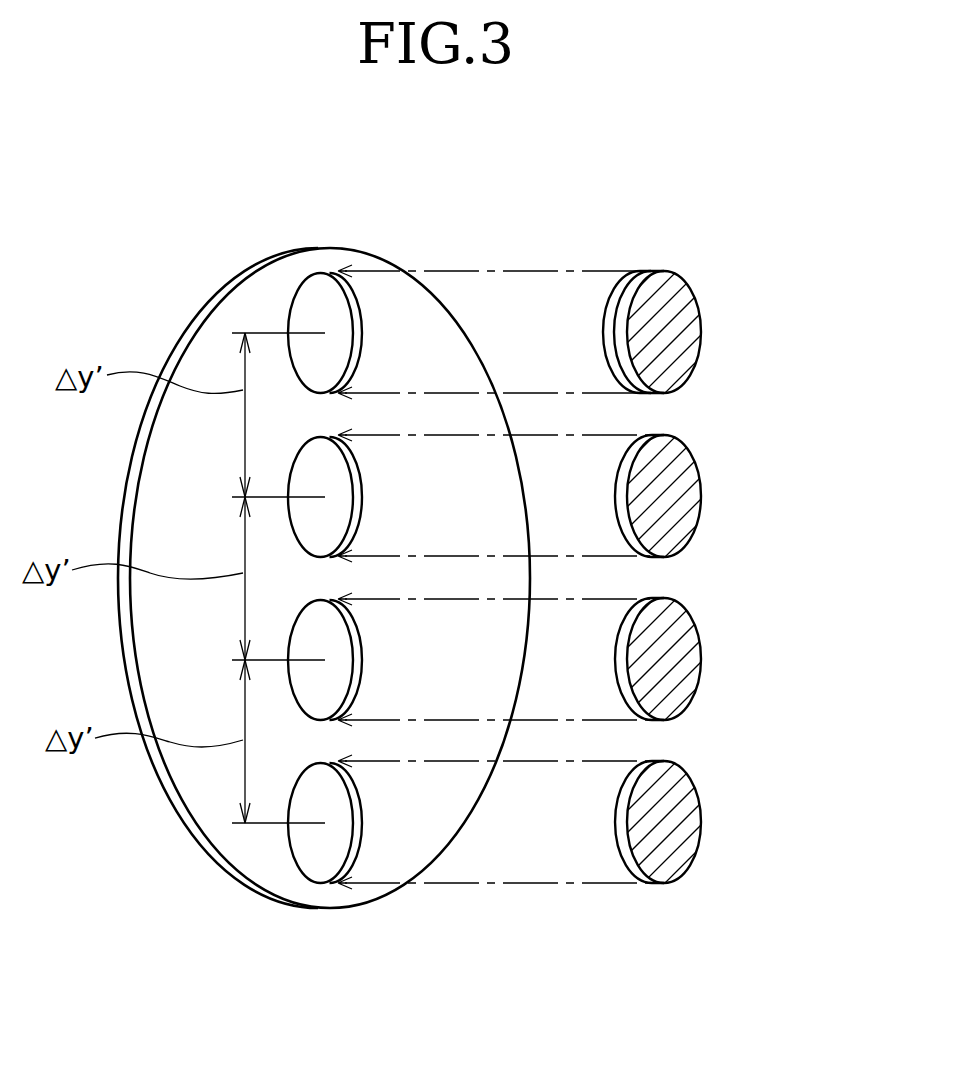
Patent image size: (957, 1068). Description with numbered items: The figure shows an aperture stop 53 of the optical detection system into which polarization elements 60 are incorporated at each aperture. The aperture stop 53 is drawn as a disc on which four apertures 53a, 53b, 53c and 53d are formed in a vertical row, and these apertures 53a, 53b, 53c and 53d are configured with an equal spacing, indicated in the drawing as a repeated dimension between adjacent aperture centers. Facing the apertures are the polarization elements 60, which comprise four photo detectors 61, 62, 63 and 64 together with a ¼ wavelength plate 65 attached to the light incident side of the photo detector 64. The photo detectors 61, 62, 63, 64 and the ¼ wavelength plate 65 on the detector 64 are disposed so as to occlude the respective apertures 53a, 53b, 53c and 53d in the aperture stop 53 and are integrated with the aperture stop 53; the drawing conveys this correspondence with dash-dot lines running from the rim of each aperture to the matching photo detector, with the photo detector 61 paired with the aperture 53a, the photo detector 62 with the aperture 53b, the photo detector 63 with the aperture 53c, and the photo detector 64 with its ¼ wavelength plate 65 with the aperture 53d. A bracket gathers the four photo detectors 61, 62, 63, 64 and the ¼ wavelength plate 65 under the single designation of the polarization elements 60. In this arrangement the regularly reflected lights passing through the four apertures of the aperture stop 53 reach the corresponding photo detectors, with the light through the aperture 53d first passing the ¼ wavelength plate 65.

The aperture stop 53 is at (360, 250).
The aperture 53a is at (300, 797).
The aperture 53b is at (300, 637).
The aperture 53c is at (300, 470).
The aperture 53d is at (308, 305).
The polarization elements 60 is at (711, 577).
The photo detector 61 is at (660, 822).
The photo detector 62 is at (701, 640).
The photo detector 63 is at (701, 480).
The photo detector 64 is at (701, 317).
The ¼ wavelength plate 65 is at (613, 318).